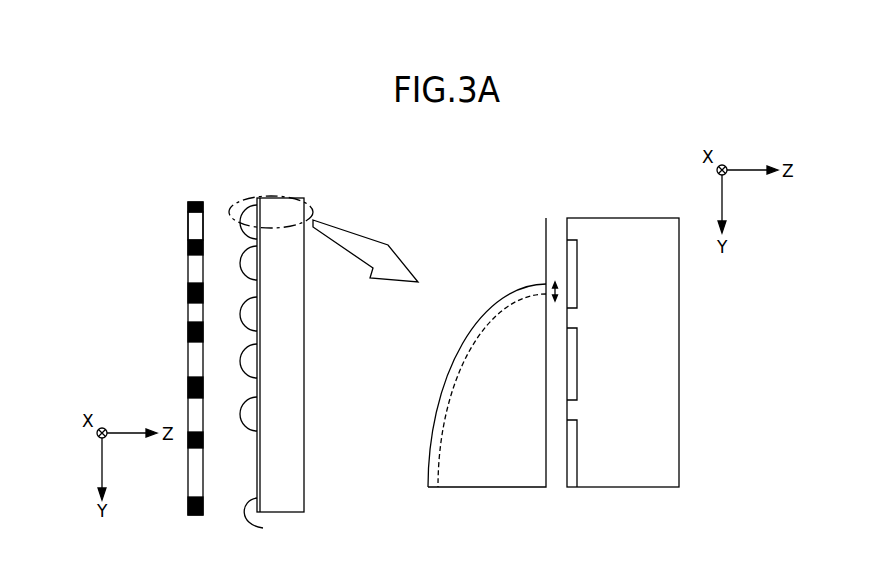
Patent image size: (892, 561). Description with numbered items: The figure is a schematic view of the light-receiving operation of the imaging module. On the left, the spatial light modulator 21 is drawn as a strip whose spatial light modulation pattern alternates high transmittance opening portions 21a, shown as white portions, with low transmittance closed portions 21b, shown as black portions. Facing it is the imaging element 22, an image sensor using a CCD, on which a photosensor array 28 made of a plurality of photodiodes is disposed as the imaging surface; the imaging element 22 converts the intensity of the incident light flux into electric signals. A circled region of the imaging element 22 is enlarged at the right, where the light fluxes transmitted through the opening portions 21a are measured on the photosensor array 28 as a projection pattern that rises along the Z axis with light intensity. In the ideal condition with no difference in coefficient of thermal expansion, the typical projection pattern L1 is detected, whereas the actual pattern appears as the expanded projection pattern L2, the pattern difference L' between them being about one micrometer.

The spatial light modulator 21 is at (197, 201).
The opening portions 21a is at (188, 226).
The closed portions 21b is at (188, 246).
The imaging element 22 is at (304, 197).
The photosensor array 28 is at (575, 187).
The projection pattern L1 is at (475, 333).
The expanded projection pattern L2 is at (485, 333).
The pattern difference L' is at (582, 292).